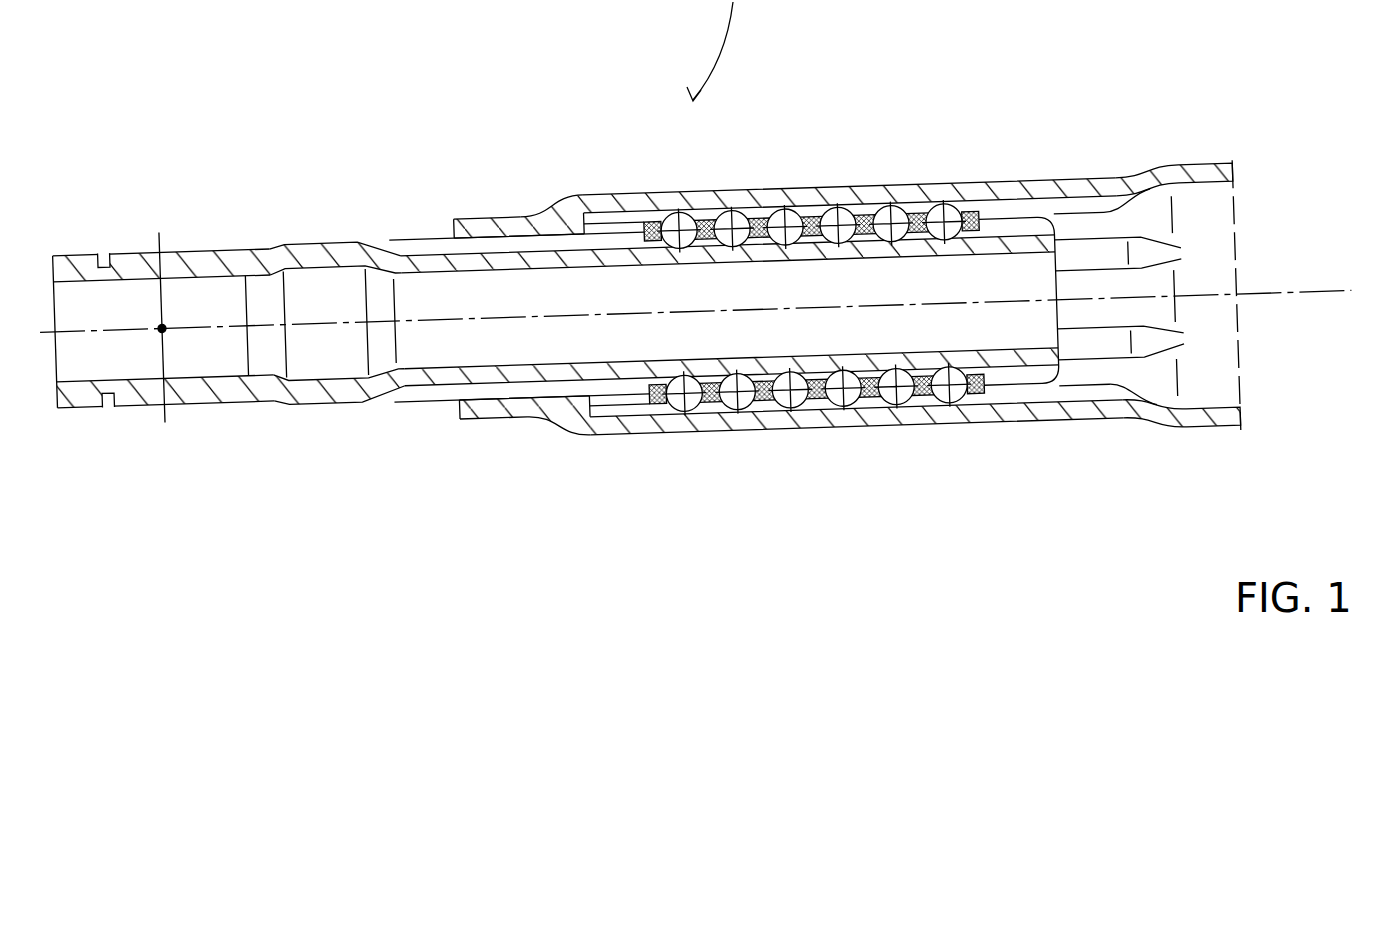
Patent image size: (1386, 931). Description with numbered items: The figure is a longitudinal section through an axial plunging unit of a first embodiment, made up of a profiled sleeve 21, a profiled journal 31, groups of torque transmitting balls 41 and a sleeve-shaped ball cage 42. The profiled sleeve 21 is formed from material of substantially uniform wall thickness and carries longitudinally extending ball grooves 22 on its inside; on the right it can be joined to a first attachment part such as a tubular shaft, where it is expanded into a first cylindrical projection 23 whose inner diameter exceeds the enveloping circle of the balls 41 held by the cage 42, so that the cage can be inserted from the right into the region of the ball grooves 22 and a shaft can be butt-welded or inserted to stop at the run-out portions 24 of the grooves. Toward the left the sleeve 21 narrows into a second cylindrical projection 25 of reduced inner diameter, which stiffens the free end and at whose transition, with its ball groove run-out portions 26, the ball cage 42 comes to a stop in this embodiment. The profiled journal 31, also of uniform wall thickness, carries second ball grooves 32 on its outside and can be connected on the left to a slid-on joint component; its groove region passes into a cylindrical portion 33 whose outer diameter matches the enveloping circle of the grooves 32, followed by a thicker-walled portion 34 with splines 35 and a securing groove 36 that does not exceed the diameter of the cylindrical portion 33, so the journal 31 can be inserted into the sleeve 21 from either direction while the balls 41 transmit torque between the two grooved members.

The profiled sleeve 21 is at (899, 186).
The ball grooves 22 is at (1039, 200).
The first cylindrical projection 23 is at (1215, 166).
The run-out portions 24 is at (1139, 194).
The second cylindrical projection 25 is at (485, 226).
The ball groove run-out portions 26 is at (556, 220).
The profiled journal 31 is at (272, 250).
The second ball grooves 32 is at (428, 248).
The cylindrical portion 33 is at (334, 250).
The portion with greater wall thickness 34 is at (227, 257).
The splines 35 is at (147, 250).
The securing groove 36 is at (106, 253).
The torque transmitting balls 41 is at (788, 232).
The ball cage 42 is at (709, 228).